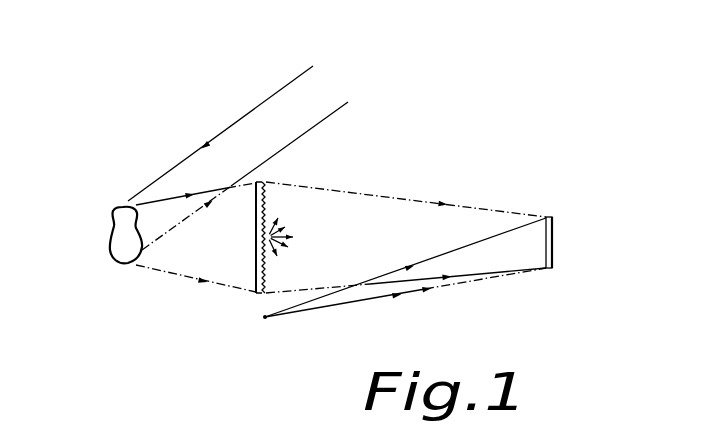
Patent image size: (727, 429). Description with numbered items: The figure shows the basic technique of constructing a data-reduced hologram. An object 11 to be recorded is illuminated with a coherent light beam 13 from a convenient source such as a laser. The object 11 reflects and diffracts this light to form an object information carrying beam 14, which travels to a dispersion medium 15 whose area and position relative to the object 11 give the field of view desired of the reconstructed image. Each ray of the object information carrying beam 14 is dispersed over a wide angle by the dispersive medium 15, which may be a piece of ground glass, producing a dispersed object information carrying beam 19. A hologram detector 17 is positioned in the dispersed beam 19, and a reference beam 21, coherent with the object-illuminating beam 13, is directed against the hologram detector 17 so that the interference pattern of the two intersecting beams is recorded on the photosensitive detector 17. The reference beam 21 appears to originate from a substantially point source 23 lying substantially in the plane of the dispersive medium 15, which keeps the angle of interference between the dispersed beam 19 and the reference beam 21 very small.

The object 11 is at (116, 249).
The coherent light beam 13 is at (257, 108).
The object information carrying beam 14 is at (173, 272).
The dispersion medium 15 is at (263, 180).
The hologram detector 17 is at (548, 215).
The dispersed object information carrying beam 19 is at (396, 203).
The reference beam 21 is at (427, 287).
The point source 23 is at (272, 322).